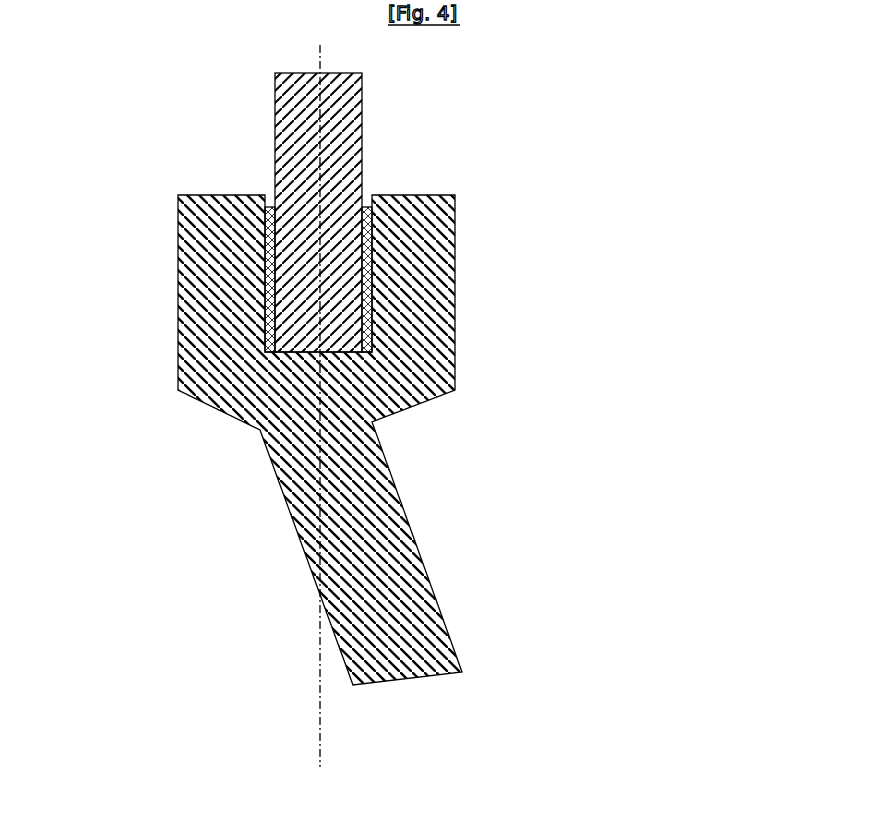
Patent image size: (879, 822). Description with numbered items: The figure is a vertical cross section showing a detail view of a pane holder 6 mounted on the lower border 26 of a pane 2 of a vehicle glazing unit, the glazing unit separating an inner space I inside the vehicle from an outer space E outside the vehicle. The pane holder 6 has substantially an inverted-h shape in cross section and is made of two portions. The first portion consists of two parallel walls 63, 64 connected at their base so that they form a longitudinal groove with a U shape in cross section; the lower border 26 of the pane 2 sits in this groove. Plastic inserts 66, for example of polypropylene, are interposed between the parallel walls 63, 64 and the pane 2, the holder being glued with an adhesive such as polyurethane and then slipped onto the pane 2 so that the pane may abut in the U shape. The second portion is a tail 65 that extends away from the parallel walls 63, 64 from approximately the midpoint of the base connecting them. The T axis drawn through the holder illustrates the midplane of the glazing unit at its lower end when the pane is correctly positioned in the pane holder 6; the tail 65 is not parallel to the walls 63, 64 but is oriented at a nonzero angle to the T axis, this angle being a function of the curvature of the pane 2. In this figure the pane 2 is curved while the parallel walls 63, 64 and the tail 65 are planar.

The pane 2 is at (362, 100).
The pane holder 6 is at (315, 440).
The lower border 26 is at (540, 386).
The parallel wall 63 is at (178, 222).
The parallel wall 64 is at (455, 214).
The tail 65 is at (407, 510).
The insert 66 is at (267, 207).
The T axis T is at (320, 752).
The outer space E is at (50, 421).
The inner space I is at (565, 421).